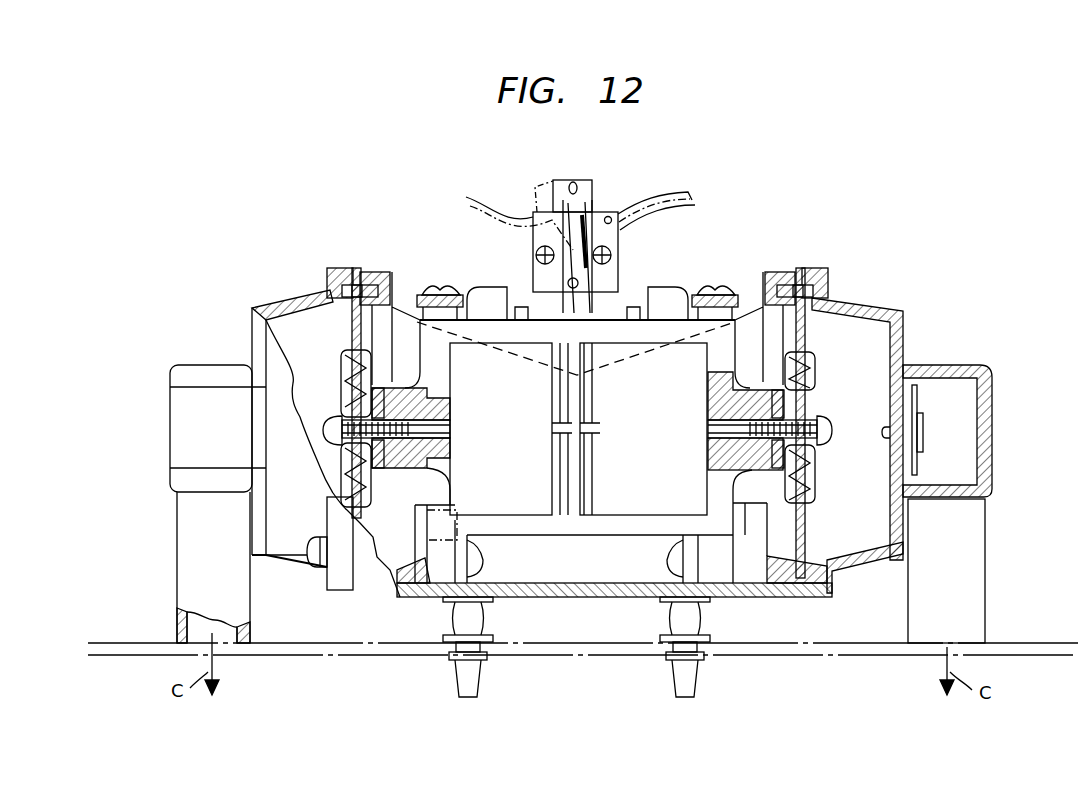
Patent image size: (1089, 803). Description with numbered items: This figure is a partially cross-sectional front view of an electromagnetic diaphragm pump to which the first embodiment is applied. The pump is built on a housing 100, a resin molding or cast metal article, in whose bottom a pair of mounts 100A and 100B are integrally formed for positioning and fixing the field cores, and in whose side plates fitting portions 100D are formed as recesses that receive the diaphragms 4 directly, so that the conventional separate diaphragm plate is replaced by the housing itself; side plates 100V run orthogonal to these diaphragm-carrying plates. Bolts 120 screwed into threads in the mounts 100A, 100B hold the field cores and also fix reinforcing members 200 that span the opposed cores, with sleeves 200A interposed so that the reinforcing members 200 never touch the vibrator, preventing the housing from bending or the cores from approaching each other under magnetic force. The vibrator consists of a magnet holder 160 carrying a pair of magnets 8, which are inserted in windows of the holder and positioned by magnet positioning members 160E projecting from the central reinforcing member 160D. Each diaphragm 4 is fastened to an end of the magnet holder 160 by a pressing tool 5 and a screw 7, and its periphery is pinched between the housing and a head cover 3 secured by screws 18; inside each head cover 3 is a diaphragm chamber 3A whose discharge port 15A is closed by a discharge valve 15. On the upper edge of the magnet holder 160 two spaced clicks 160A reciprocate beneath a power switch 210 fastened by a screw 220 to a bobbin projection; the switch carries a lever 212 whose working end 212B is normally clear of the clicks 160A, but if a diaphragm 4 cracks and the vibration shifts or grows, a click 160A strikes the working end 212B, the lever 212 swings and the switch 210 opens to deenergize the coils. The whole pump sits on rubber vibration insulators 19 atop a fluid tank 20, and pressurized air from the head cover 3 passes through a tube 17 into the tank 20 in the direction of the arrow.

The head cover 3 is at (256, 320).
The diaphragm chamber 3A is at (870, 513).
The diaphragm 4 is at (352, 330).
The pressing tool 5 is at (350, 350).
The screw 7 is at (335, 422).
The magnet 8 is at (476, 353).
The discharge valve 15 is at (918, 390).
The discharge port 15A is at (918, 458).
The tube 17 is at (185, 528).
The screw 18 is at (309, 552).
The rubber vibration insulator 19 is at (476, 668).
The fluid tank 20 is at (1040, 645).
The housing 100 is at (788, 602).
The mount 100A is at (412, 582).
The mount 100B is at (607, 585).
The fitting portion 100D is at (330, 287).
The side plate 100V is at (400, 288).
The bolt 120 is at (440, 284).
The magnet holder 160 is at (668, 322).
The click 160A is at (477, 352).
The reinforcing member 160D is at (585, 480).
The magnet positioning member 160E is at (592, 440).
The reinforcing member 200 is at (421, 300).
The sleeve 200A is at (397, 310).
The power switch 210 is at (604, 170).
The lever 212 is at (553, 232).
The working end 212B is at (576, 418).
The screw 220 is at (535, 258).